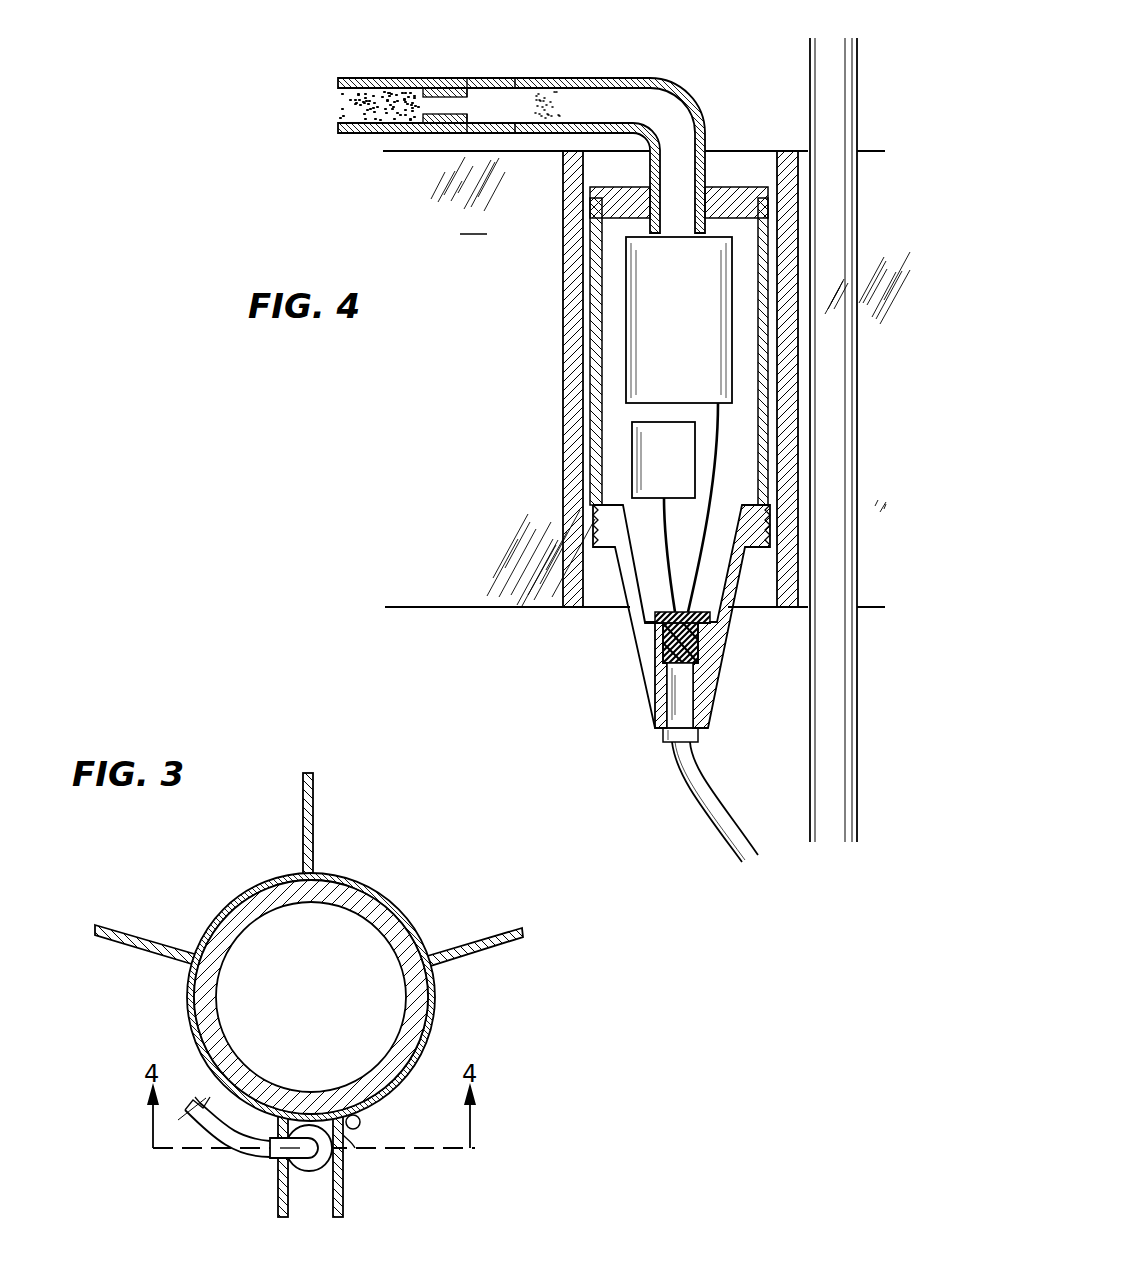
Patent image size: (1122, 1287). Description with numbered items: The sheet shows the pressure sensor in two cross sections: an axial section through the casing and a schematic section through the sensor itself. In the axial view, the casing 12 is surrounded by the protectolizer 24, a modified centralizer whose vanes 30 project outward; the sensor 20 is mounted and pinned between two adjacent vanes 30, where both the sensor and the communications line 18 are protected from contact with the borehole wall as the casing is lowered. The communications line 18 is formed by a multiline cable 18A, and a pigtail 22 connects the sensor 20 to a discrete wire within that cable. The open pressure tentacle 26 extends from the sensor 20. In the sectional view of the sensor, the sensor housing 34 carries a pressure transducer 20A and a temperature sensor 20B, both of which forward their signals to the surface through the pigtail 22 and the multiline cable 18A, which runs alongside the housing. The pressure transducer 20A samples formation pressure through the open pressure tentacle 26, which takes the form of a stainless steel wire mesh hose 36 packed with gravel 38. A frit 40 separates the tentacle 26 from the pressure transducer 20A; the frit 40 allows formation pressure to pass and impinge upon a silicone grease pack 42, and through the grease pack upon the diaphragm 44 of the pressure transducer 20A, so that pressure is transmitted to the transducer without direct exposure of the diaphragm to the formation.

In FIG. 3, the casing 12 is at (215, 989).
In FIG. 3, the communications line 18 is at (361, 1121).
In FIG. 4, the multiline cable 18A is at (858, 462).
In FIG. 3, the sensor 20 is at (310, 1172).
In FIG. 4, the pressure transducer 20A is at (700, 336).
In FIG. 4, the temperature sensor 20B is at (685, 473).
In FIG. 4, the pigtail 22 is at (702, 810).
In FIG. 3, the pigtail 22 is at (355, 1142).
In FIG. 4, the protectolizer 24 is at (475, 222).
In FIG. 3, the protectolizer 24 is at (400, 910).
In FIG. 4, the open pressure tentacle 26 is at (544, 120).
In FIG. 3, the open pressure tentacle 26 is at (220, 1138).
In FIG. 4, the vanes 30 is at (563, 384).
In FIG. 3, the vanes 30 is at (313, 806).
In FIG. 4, the sensor housing 34 is at (655, 677).
In FIG. 4, the stainless steel wire mesh hose 36 is at (412, 78).
In FIG. 4, the gravel 38 is at (376, 112).
In FIG. 4, the frit 40 is at (545, 105).
In FIG. 4, the silicone grease pack 42 is at (672, 112).
In FIG. 4, the diaphragm 44 is at (677, 227).